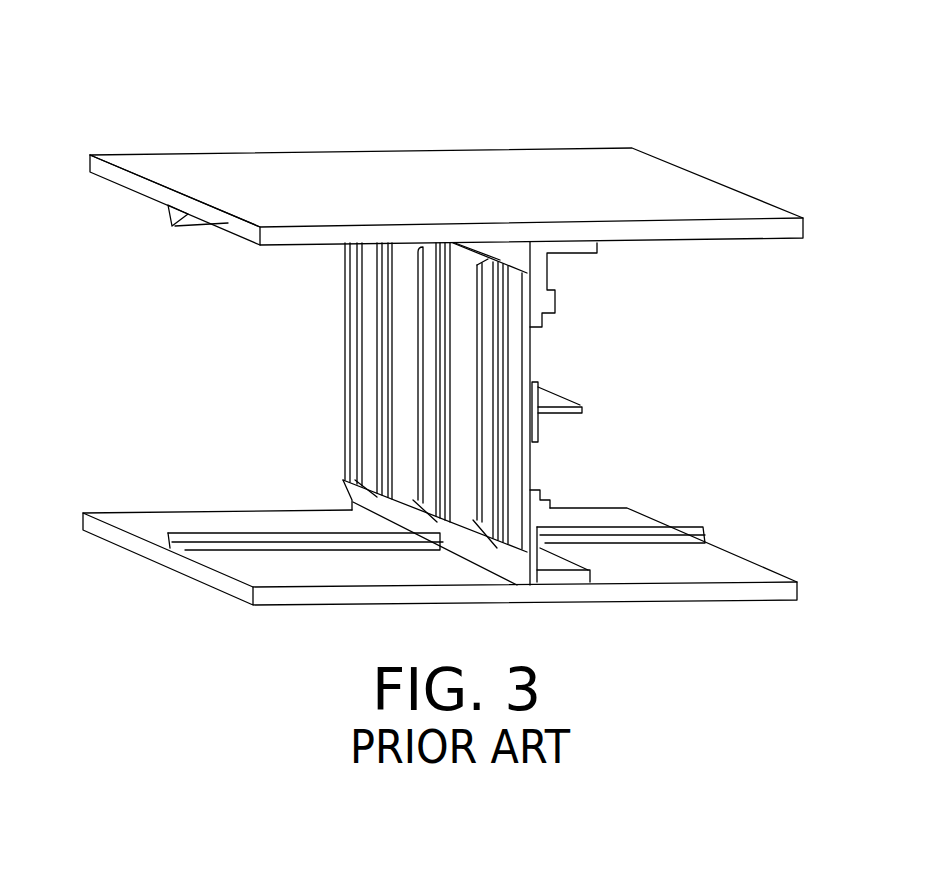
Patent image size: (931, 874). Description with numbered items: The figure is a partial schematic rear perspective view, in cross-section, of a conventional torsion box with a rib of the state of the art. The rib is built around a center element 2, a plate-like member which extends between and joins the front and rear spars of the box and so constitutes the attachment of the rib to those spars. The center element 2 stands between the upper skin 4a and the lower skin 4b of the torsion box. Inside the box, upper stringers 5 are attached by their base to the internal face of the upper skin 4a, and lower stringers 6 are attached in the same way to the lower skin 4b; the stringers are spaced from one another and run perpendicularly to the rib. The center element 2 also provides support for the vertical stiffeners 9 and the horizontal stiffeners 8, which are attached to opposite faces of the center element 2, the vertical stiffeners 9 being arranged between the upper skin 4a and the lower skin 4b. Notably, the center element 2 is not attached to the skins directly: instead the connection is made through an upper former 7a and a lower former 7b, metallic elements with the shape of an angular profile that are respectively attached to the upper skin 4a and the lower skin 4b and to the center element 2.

The center element of the rib 2 is at (480, 413).
The upper skin 4a is at (223, 172).
The lower skin 4b is at (313, 592).
The upper stringers 5 is at (170, 227).
The lower stringers 6 is at (305, 540).
The upper former 7a is at (557, 292).
The lower former 7b is at (557, 562).
The horizontal stiffener 8 is at (540, 432).
The vertical stiffener 9 is at (367, 283).